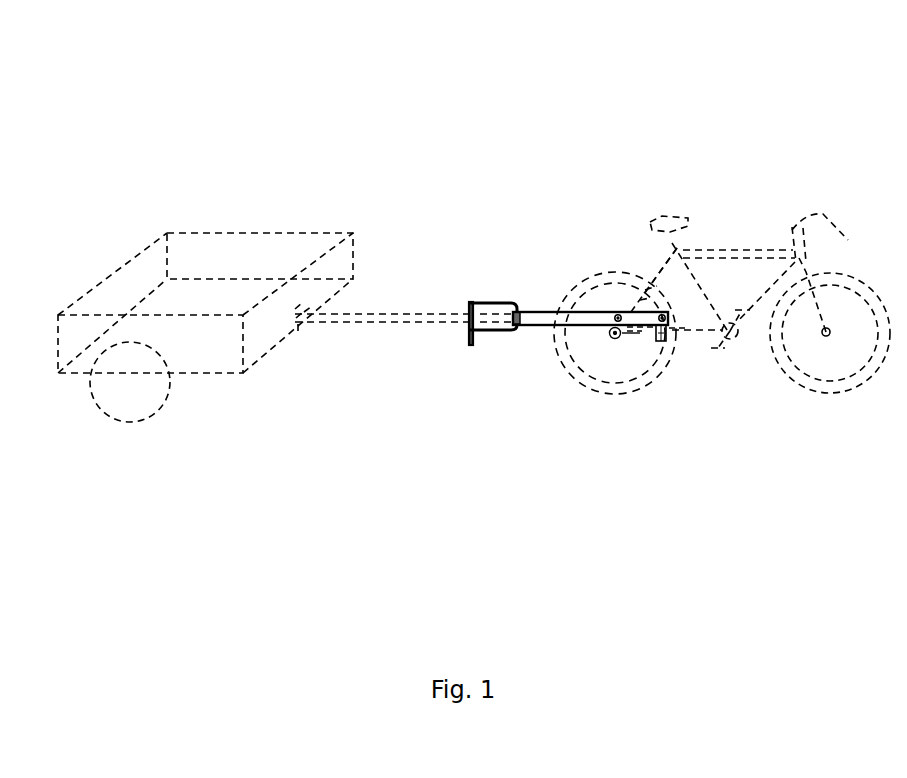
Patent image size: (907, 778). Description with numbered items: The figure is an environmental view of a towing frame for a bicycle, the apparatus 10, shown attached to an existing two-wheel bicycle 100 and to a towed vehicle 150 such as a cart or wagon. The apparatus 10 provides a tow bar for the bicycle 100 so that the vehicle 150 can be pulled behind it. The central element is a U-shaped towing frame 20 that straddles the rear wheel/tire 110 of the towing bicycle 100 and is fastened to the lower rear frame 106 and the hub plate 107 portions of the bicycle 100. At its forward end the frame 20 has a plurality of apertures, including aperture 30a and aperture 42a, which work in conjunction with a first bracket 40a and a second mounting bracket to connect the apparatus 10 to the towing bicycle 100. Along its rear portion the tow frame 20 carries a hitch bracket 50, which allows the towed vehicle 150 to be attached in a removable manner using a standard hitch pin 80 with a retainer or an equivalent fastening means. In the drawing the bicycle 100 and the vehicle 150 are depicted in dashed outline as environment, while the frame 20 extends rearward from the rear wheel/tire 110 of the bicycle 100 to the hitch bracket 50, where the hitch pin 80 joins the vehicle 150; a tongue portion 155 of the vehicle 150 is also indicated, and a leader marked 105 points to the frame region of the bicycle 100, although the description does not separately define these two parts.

The towing frame for a bicycle 10 is at (490, 211).
The towing frame 20 is at (585, 313).
The aperture 30a is at (619, 315).
The first bracket 40a is at (667, 338).
The aperture 42a is at (663, 320).
The hitch bracket 50 is at (508, 330).
The hitch pin 80 is at (468, 302).
The bicycle 100 is at (742, 248).
The bicycle frame 105 is at (658, 277).
The lower rear frame 106 is at (642, 333).
The hub plate 107 is at (621, 339).
The rear wheel/tire 110 is at (650, 382).
The towed vehicle 150 is at (298, 233).
The trailer tongue 155 is at (365, 323).